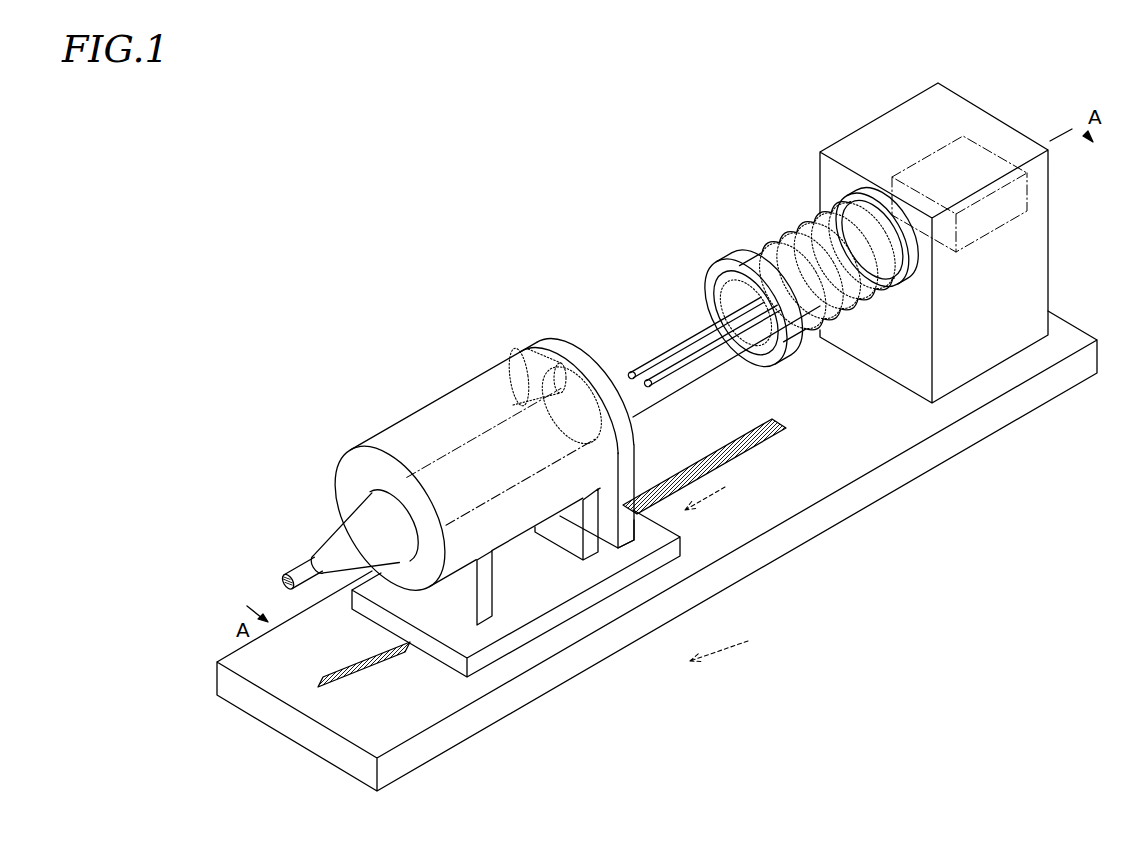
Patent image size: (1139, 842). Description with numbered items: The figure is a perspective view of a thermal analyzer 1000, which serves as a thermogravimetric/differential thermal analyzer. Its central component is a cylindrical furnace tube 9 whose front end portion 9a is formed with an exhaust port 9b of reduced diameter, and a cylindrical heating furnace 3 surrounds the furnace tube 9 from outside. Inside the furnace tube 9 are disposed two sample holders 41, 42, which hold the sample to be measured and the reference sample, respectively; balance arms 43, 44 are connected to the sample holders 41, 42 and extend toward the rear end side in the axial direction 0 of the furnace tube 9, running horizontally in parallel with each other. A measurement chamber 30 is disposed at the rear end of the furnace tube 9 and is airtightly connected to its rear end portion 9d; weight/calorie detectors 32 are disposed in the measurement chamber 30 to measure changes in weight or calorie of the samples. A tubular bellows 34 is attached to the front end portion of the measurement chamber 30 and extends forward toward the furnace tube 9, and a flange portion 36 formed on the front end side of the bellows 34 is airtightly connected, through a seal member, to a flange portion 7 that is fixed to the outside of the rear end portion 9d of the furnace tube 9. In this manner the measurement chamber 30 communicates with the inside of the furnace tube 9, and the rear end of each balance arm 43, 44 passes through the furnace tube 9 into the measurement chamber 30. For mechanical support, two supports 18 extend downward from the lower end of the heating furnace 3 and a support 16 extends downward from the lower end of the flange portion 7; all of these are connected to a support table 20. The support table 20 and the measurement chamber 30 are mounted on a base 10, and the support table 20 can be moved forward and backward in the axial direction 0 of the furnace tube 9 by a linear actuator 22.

The thermal analyzer 1000 is at (905, 580).
The base 10 is at (848, 514).
The linear actuator 22 is at (347, 667).
The support table 20 is at (440, 657).
The supports 18 is at (503, 592).
The support 16 is at (605, 545).
The measurement chamber 30 is at (1037, 265).
The weight/calorie detectors 32 is at (1025, 195).
The heating furnace 3 is at (372, 441).
The flange portion 7 is at (584, 358).
The furnace tube 9 is at (325, 524).
The front end portion 9a is at (298, 558).
The exhaust port 9b is at (286, 582).
The rear end portion 9d is at (529, 349).
The sample holder 41 is at (630, 370).
The sample holder 42 is at (647, 378).
The balance arm 43 is at (682, 343).
The balance arm 44 is at (706, 350).
The flange portion 36 is at (750, 272).
The bellows 34 is at (845, 305).
The axial direction 0 is at (719, 656).